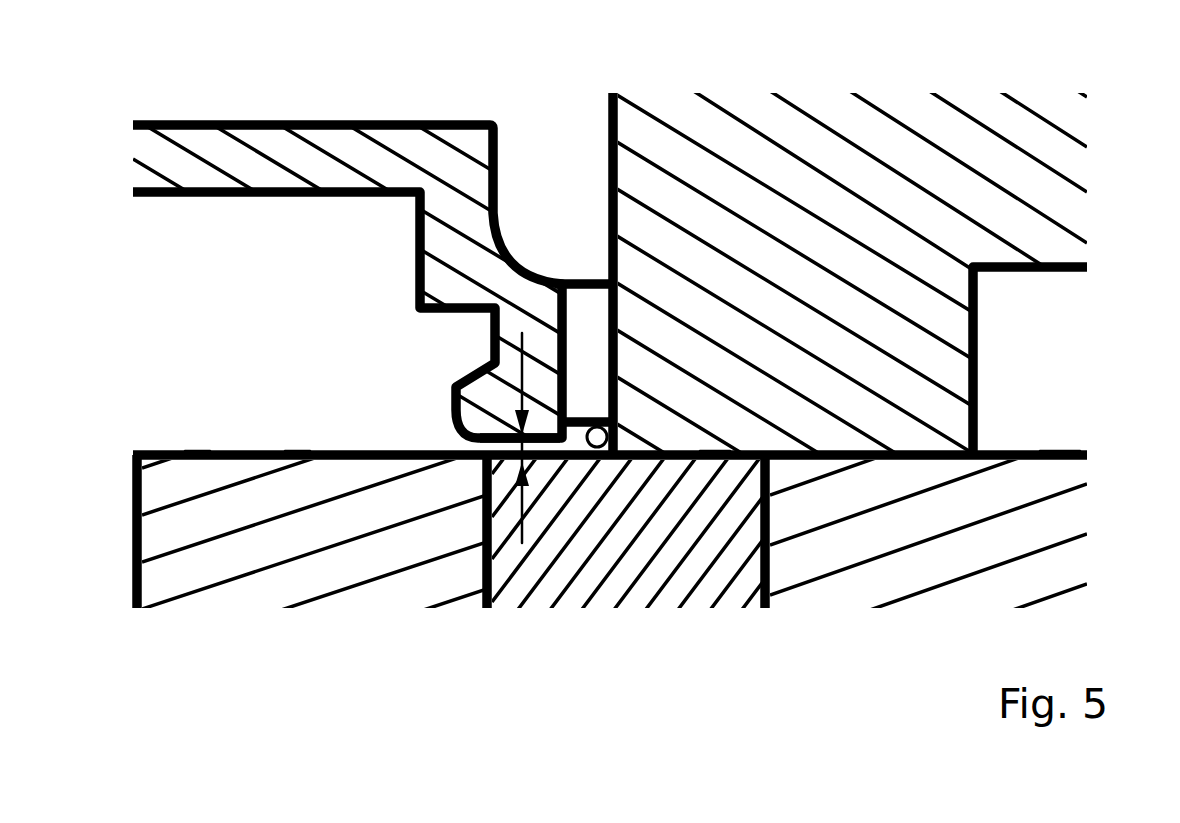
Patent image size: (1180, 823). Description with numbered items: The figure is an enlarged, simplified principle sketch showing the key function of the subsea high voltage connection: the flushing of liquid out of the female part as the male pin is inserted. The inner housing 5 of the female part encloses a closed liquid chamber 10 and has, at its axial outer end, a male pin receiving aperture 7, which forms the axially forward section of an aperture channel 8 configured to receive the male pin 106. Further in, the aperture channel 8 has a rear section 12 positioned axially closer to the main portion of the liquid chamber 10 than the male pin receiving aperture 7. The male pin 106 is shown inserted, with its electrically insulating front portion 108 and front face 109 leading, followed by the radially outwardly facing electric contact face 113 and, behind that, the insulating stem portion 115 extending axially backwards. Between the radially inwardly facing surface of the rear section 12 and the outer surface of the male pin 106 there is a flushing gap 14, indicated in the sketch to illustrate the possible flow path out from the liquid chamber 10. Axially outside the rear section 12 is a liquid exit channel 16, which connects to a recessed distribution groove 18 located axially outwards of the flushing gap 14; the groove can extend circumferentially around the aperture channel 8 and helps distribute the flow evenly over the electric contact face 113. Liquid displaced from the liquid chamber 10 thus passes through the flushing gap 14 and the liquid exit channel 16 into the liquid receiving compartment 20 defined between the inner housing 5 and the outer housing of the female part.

The inner housing 5 is at (280, 143).
The male pin receiving aperture 7 is at (922, 458).
The aperture channel 8 is at (685, 460).
The liquid chamber 10 is at (246, 292).
The rear section 12 is at (547, 462).
The flushing gap 14 is at (497, 449).
The liquid exit channel 16 is at (600, 312).
The distribution groove 18 is at (622, 447).
The liquid receiving compartment 20 is at (531, 197).
The male pin 106 is at (200, 446).
The front portion 108 is at (298, 452).
The front face 109 is at (132, 530).
The electric contact face 113 is at (715, 452).
The insulating stem portion 115 is at (1060, 452).